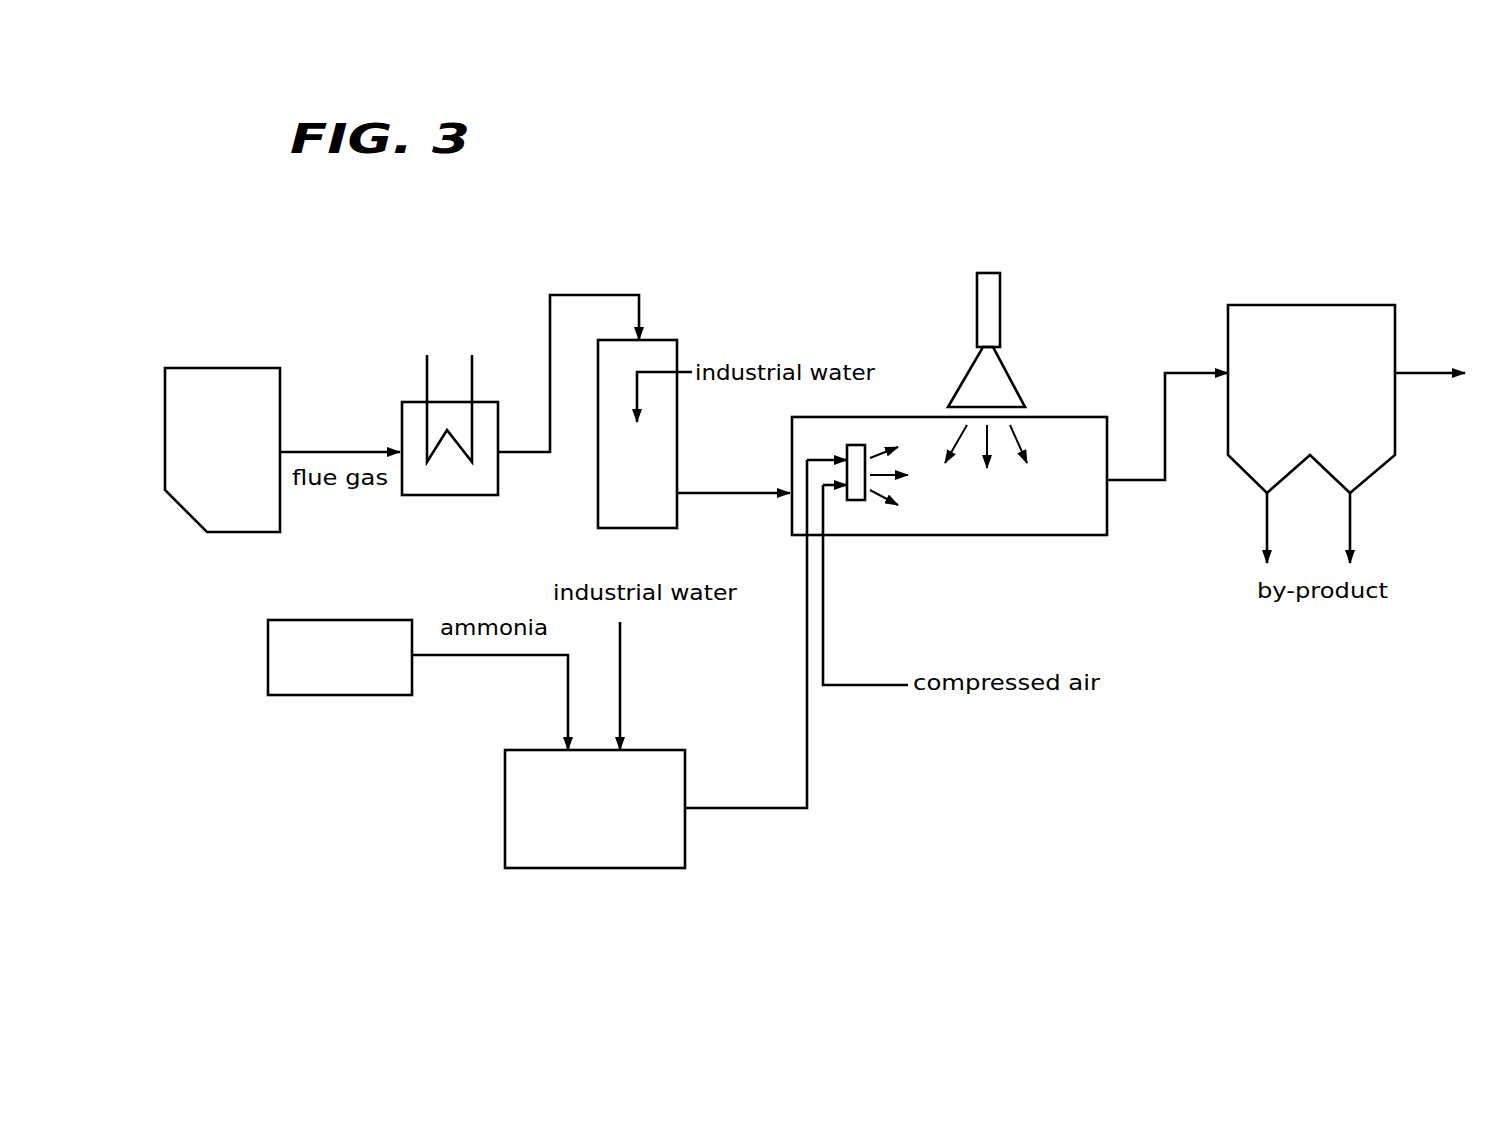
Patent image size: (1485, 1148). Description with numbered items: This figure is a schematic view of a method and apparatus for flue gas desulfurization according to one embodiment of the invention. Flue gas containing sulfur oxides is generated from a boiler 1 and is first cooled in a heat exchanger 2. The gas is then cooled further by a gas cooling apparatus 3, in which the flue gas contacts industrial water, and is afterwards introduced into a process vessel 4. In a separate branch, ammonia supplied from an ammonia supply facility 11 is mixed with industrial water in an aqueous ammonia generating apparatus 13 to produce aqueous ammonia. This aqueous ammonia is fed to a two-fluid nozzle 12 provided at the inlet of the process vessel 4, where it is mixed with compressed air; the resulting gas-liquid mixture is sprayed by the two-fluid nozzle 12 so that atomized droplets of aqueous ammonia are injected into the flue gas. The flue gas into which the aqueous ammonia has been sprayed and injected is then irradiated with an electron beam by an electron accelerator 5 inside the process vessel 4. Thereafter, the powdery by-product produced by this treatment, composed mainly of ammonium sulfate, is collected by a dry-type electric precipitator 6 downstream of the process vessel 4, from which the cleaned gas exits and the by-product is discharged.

The boiler 1 is at (260, 368).
The heat exchanger 2 is at (438, 495).
The gas cooling apparatus 3 is at (672, 340).
The process vessel 4 is at (892, 417).
The electron accelerator 5 is at (1000, 315).
The dry-type electric precipitator 6 is at (1327, 305).
The ammonia supply facility 11 is at (332, 695).
The two-fluid nozzle 12 is at (855, 500).
The aqueous ammonia generating apparatus 13 is at (608, 868).